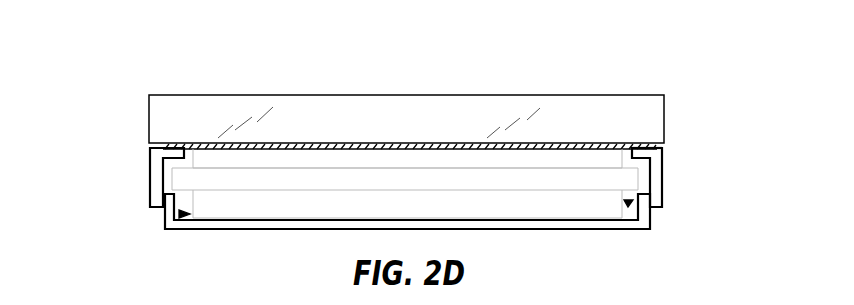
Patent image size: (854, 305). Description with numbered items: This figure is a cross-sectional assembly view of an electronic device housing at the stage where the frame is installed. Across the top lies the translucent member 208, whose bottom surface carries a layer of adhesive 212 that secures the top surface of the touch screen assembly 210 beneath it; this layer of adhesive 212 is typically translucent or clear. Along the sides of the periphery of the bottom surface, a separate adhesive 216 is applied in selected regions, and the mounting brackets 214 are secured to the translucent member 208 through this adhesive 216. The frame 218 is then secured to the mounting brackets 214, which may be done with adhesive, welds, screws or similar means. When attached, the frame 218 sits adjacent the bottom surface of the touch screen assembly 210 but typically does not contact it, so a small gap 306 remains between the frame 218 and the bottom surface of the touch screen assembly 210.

The translucent member 208 is at (423, 131).
The layer of adhesive 212 is at (460, 143).
The mounting brackets 214 is at (158, 172).
The adhesive 216 is at (150, 147).
The touch screen assembly 210 is at (628, 207).
The frame 218 is at (280, 229).
The gap 306 is at (178, 222).